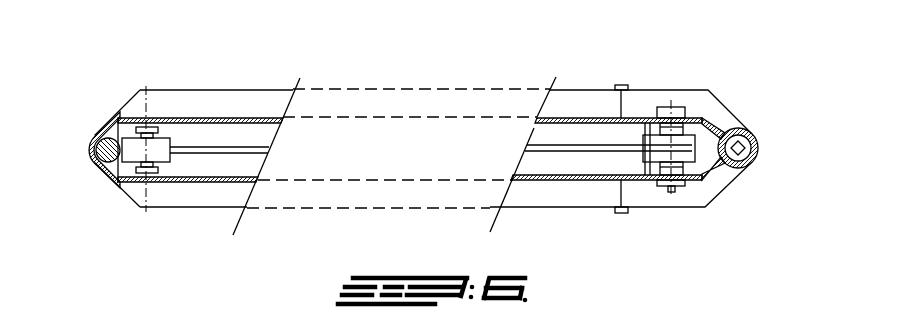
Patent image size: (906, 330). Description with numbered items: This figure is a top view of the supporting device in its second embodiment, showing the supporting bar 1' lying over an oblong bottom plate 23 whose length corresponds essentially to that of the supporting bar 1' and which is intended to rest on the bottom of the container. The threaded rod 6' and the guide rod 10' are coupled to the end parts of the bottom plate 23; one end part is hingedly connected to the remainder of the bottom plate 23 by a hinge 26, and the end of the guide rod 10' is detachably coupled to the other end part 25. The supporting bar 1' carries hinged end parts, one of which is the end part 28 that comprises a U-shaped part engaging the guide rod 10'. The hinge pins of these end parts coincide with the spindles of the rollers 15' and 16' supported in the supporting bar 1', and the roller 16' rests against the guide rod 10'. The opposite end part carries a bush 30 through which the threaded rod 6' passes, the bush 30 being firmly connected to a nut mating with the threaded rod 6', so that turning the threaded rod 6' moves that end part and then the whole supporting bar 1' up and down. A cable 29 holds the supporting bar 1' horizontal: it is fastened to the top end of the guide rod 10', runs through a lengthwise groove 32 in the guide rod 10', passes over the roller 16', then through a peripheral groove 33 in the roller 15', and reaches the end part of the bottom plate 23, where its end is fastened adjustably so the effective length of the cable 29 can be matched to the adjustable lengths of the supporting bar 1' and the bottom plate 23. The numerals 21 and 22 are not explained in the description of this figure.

The supporting bar 1' is at (410, 76).
The bottom plate 23 is at (237, 106).
The housing end 21 is at (702, 104).
The end part of the bottom plate 25 is at (157, 104).
The end part of the supporting bar 28 is at (103, 132).
The guide rod 10' is at (86, 161).
The groove 32 is at (105, 178).
The roller 16' is at (156, 192).
The cable 29 is at (560, 150).
The hinge 26 is at (623, 216).
The peripheral groove 33 is at (650, 170).
The roller 15' is at (687, 188).
The link 22 is at (720, 122).
The bush 30 is at (754, 137).
The threaded rod 6' is at (764, 158).